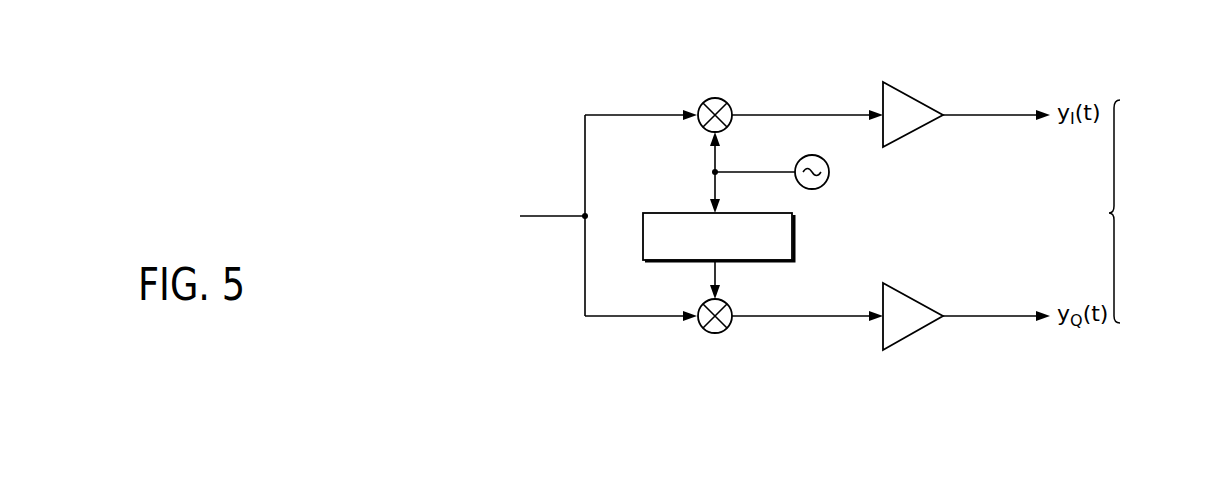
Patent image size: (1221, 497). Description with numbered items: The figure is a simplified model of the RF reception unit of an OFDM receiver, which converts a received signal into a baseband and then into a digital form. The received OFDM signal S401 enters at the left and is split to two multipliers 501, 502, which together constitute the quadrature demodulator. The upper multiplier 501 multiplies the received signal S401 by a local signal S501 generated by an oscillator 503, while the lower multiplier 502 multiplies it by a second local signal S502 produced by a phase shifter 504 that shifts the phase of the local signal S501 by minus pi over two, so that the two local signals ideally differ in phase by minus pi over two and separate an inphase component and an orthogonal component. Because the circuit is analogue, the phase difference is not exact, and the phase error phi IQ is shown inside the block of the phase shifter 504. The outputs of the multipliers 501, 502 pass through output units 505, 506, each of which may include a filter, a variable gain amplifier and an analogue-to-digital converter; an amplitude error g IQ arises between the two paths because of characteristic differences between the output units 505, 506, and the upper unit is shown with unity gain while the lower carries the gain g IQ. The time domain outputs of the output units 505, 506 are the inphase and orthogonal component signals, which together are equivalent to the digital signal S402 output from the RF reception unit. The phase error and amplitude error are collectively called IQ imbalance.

The multiplier 501 is at (715, 97).
The multiplier 502 is at (716, 333).
The oscillator 503 is at (829, 172).
The phase shifter 504 is at (792, 237).
The output unit 505 is at (906, 90).
The output unit 506 is at (906, 343).
The received OFDM signal S401 is at (541, 216).
The local signal S501 is at (713, 157).
The local signal S502 is at (712, 285).
The digital signal S402 is at (1140, 211).